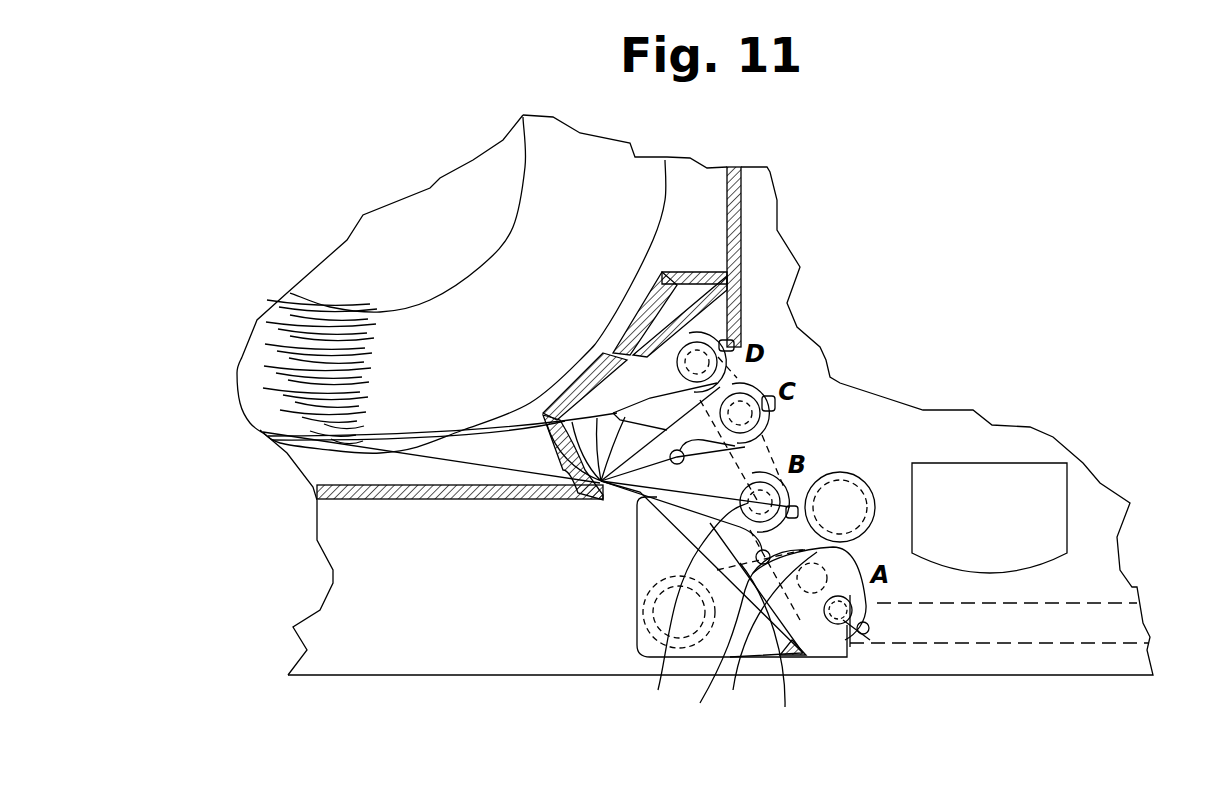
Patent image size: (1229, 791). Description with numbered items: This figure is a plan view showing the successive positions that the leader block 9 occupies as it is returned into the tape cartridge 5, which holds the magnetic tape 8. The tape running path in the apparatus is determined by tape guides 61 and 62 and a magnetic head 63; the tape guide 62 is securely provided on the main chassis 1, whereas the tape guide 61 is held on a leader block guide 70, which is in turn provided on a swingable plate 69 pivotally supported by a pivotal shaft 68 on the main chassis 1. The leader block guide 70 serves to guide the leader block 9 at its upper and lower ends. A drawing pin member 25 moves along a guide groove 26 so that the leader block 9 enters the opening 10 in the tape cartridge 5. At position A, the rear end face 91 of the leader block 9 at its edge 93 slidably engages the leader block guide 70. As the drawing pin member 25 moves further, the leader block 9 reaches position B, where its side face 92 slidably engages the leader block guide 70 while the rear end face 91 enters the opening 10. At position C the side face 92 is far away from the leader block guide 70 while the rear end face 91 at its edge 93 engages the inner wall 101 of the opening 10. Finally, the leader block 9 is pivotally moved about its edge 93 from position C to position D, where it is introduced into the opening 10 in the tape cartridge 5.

The main chassis 1 is at (363, 568).
The tape cartridge 5 is at (742, 208).
The magnetic tape 8 is at (295, 410).
The opening 10 is at (740, 374).
The inner wall 101 is at (555, 493).
The drawing pin member 25 is at (850, 617).
The guide groove 26 is at (1030, 647).
The tape guide 61 is at (663, 623).
The tape guide 62 is at (840, 497).
The magnetic head 63 is at (997, 480).
The pivotal shaft 68 is at (825, 633).
The swingable plate 69 is at (837, 647).
The leader block guide 70 is at (643, 552).
The leader block 9 is at (767, 650).
The rear end face 91 is at (689, 617).
The side face 92 is at (771, 642).
The edge 93 is at (743, 647).